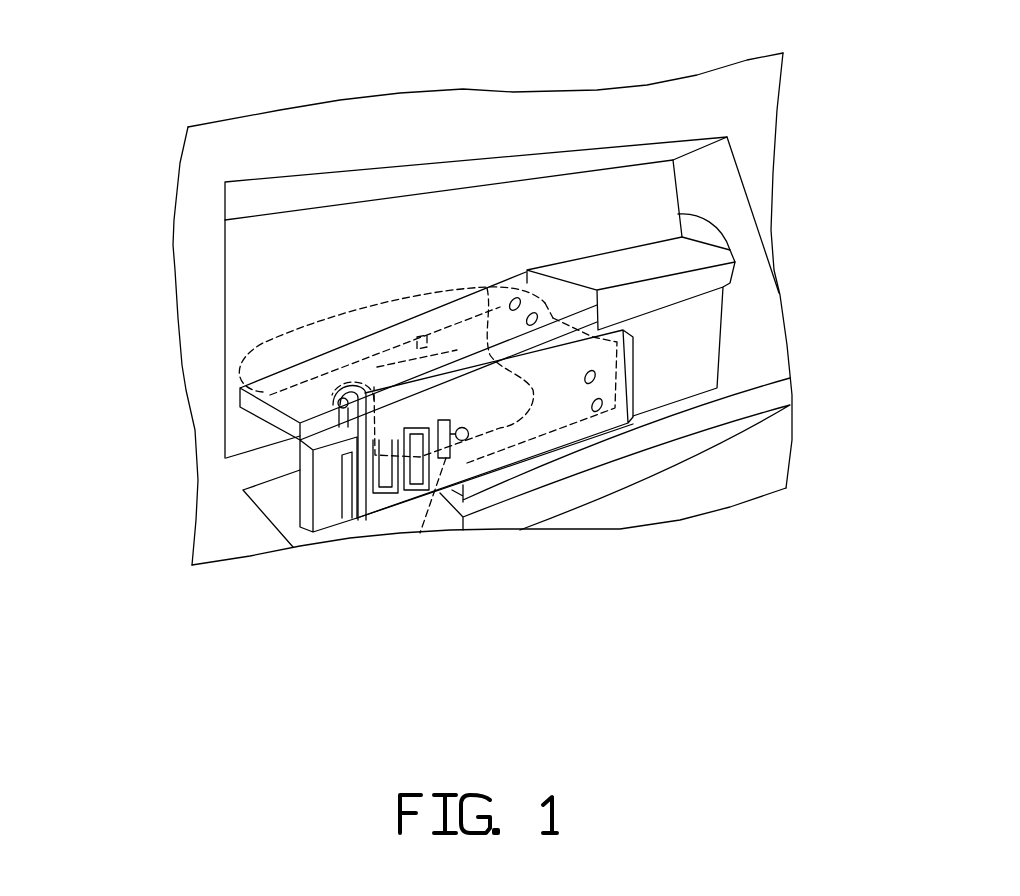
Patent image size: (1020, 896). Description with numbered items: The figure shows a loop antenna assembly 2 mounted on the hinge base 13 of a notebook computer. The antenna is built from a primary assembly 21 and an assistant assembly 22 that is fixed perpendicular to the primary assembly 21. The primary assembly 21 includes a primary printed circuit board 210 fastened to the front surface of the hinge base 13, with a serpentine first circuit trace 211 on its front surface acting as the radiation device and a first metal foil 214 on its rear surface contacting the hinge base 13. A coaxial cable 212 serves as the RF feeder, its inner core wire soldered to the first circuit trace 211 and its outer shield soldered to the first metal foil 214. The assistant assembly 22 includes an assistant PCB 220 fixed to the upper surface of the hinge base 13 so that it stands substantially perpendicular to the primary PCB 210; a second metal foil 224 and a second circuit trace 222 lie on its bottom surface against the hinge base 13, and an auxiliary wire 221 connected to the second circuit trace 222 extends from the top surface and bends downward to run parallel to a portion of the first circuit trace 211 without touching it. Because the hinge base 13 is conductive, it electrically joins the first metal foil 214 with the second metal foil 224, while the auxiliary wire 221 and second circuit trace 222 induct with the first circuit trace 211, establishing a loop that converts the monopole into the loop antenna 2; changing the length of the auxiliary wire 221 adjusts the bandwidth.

The loop antenna assembly 2 is at (97, 443).
The hinge base 13 is at (700, 345).
The primary assembly 21 is at (274, 501).
The assistant assembly 22 is at (238, 412).
The primary printed circuit board 210 is at (617, 476).
The first circuit trace 211 is at (342, 512).
The cable 212 is at (424, 513).
The first metal foil 214 is at (617, 379).
The assistant PCB 220 is at (367, 352).
The auxiliary wire 221 is at (358, 478).
The second circuit trace 222 is at (336, 398).
The second metal foil 224 is at (553, 318).